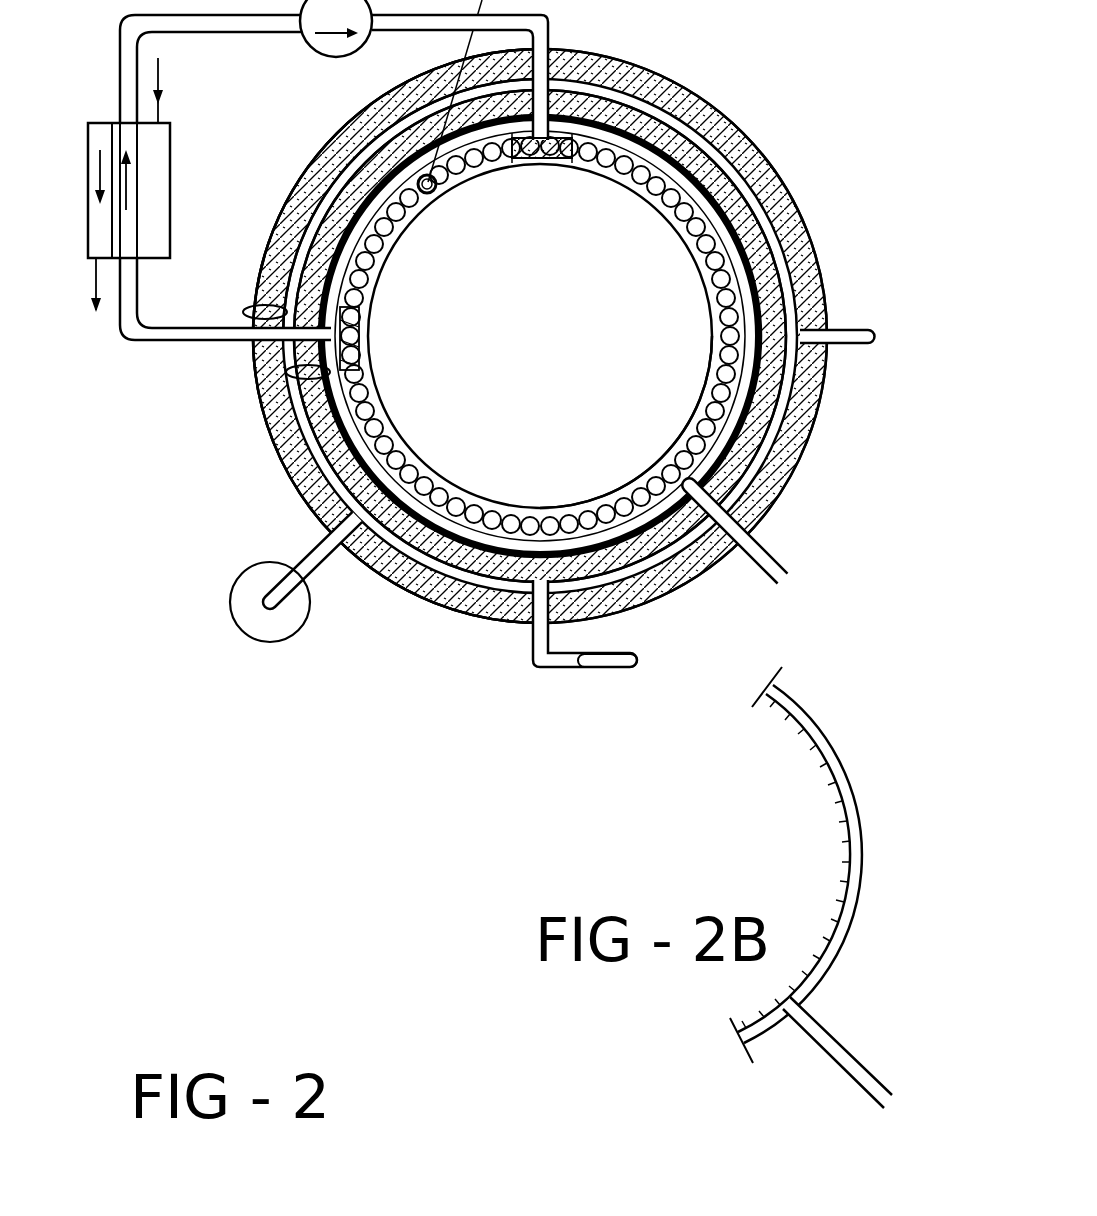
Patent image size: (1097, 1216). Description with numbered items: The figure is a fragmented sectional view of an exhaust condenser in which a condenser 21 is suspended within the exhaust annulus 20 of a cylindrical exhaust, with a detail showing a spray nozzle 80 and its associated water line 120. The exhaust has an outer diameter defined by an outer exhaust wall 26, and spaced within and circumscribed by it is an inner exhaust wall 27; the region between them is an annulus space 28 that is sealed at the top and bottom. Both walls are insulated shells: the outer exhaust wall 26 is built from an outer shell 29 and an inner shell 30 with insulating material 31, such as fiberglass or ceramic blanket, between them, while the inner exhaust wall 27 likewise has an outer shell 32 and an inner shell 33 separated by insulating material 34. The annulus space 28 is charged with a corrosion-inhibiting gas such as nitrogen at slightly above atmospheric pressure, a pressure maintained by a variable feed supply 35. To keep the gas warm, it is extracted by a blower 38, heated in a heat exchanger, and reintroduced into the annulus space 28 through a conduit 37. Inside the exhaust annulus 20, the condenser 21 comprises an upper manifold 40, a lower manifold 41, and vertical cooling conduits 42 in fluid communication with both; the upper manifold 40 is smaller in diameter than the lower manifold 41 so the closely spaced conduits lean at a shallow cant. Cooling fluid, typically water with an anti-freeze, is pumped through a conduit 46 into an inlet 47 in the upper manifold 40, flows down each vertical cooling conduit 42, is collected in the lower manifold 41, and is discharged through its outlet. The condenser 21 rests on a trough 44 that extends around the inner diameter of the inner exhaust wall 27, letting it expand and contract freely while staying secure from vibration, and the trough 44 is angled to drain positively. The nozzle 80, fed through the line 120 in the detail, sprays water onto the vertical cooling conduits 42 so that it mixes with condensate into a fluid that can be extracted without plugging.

In FIG. 2, the exhaust annulus 20 is at (540, 336).
In FIG. 2, the condenser 21 is at (422, 751).
In FIG. 2, the outer exhaust wall 26 is at (243, 312).
In FIG. 2, the inner exhaust wall 27 is at (286, 372).
In FIG. 2, the annulus space 28 is at (505, 588).
In FIG. 2, the outer shell 29 is at (283, 222).
In FIG. 2, the inner shell 30 is at (265, 275).
In FIG. 2, the insulating material 31 is at (316, 170).
In FIG. 2, the outer shell 32 is at (273, 423).
In FIG. 2, the inner shell 33 is at (315, 462).
In FIG. 2, the insulating material 34 is at (420, 553).
In FIG. 2, the variable feed supply 35 is at (877, 343).
In FIG. 2, the conduit 37 is at (268, 603).
In FIG. 2, the blower 38 is at (232, 598).
In FIG. 2, the upper manifold 40 is at (532, 160).
In FIG. 2, the lower manifold 41 is at (355, 323).
In FIG. 2, the vertical cooling conduits 42 is at (432, 190).
In FIG. 2, the trough 44 is at (687, 423).
In FIG. 2, the conduit 46 is at (183, 342).
In FIG. 2, the inlet 47 is at (657, 72).
In FIG. 2, the nozzle 80 is at (722, 243).
In FIG. 2B, the nozzle 80 is at (820, 755).
In FIG. 2, the lubricant drain tube 120 is at (790, 570).
In FIG. 2B, the lubricant drain tube 120 is at (852, 1053).